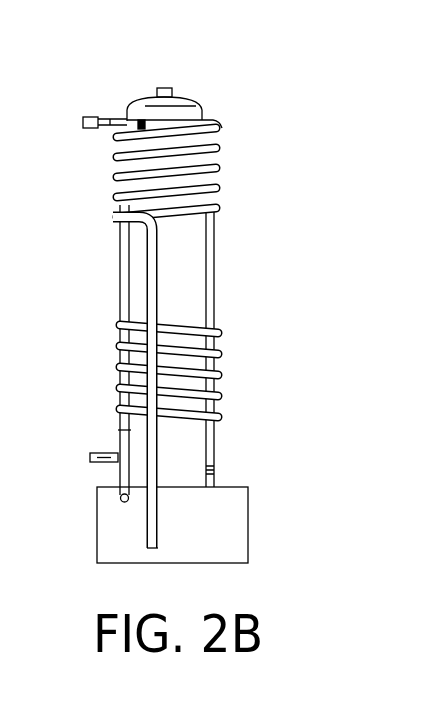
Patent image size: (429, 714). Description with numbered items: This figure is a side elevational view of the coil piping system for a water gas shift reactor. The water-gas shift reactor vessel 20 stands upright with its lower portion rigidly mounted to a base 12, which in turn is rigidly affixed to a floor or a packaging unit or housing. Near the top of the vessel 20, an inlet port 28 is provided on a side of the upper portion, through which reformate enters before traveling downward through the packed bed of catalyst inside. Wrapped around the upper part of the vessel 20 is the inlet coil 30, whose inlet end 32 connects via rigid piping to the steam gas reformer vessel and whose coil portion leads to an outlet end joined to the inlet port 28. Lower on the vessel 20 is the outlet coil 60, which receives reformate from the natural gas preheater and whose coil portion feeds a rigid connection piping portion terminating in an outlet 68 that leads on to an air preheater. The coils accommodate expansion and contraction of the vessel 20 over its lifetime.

The base 12 is at (222, 523).
The water-gas shift reactor vessel 20 is at (198, 288).
The inlet port 28 is at (138, 122).
The inlet coil 30 is at (254, 168).
The inlet end 32 is at (147, 545).
The outlet coil 60 is at (254, 391).
The outlet 68 is at (120, 498).